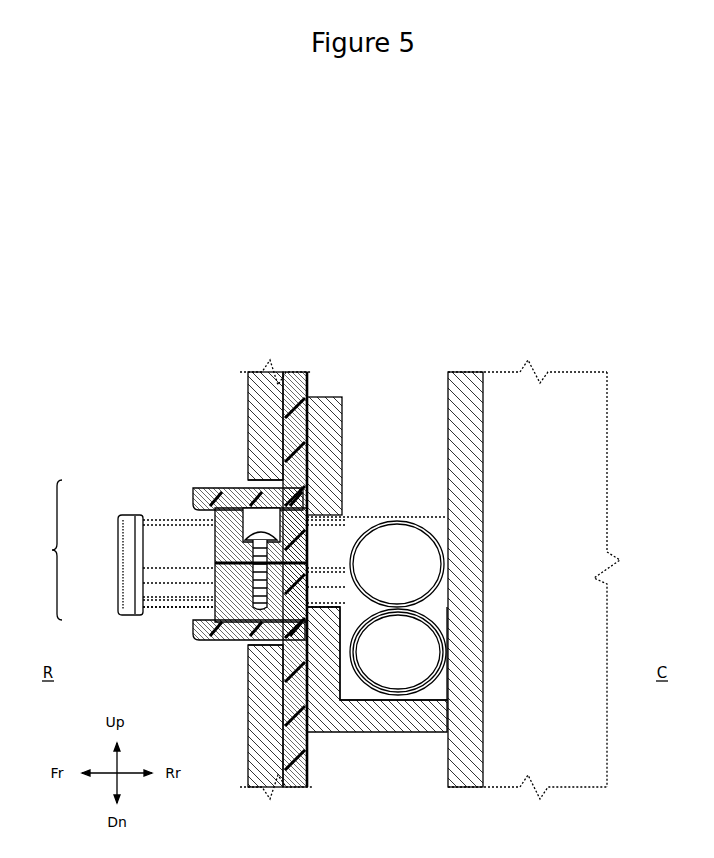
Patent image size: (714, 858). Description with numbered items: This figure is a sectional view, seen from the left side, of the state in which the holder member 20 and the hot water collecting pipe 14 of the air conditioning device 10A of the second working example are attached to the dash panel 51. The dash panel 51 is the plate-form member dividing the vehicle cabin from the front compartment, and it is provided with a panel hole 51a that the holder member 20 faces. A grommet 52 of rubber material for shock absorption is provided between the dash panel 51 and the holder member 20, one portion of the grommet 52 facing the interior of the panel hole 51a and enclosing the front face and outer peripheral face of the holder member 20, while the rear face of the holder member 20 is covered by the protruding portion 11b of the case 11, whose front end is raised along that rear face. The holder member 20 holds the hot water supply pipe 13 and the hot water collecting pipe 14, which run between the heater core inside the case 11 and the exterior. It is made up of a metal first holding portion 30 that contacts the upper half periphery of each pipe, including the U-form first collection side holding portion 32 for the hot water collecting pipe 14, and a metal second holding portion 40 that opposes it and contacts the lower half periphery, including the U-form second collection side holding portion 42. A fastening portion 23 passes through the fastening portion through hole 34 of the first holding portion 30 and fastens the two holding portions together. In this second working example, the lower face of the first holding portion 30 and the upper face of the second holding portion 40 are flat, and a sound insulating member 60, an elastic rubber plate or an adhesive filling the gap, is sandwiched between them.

The air conditioning device 10A is at (577, 340).
The case 11 is at (362, 443).
The protruding portion 11b is at (362, 443).
The hot water supply pipe 13 is at (411, 528).
The hot water collecting pipe 14 is at (172, 612).
The holder member 20 is at (183, 559).
The fastening portion 23 is at (193, 495).
The first holding portion 30 is at (207, 533).
The first collection side holding portion 32 is at (342, 503).
The fastening portion through hole 34 is at (260, 505).
The second holding portion 40 is at (205, 590).
The second collection side holding portion 42 is at (385, 577).
The dash panel 51 is at (247, 392).
The panel hole 51a is at (250, 648).
The grommet 52 is at (310, 383).
The sound insulating member 60 is at (213, 563).